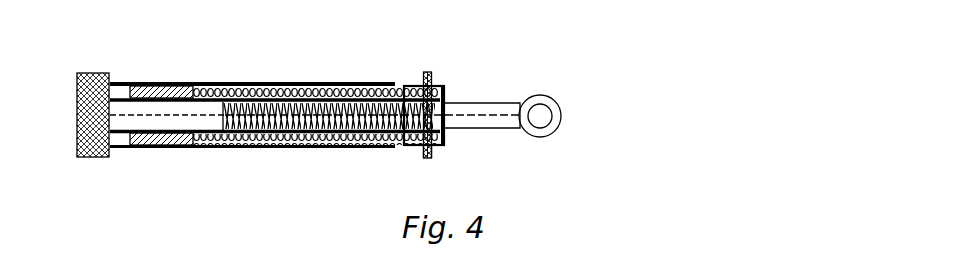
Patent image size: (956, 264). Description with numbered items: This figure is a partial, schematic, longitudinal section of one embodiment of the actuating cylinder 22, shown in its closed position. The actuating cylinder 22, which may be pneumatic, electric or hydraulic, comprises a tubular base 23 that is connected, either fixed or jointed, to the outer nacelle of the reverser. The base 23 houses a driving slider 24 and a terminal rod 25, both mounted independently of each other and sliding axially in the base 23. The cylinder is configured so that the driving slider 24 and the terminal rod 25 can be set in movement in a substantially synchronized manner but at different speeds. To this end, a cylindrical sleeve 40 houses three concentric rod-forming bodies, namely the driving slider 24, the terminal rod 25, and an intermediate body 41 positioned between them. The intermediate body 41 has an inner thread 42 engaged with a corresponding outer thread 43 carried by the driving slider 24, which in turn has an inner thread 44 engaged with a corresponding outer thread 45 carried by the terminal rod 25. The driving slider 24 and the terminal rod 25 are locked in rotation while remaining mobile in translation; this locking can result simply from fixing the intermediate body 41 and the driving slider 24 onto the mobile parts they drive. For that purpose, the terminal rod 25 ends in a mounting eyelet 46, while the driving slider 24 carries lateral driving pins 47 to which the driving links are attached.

The actuating cylinder 22 is at (350, 72).
The tubular base 23 is at (91, 73).
The driving slider 24 is at (407, 140).
The terminal rod 25 is at (335, 134).
The cylindrical sleeve 40 is at (281, 86).
The intermediate body 41 is at (408, 96).
The inner thread 42 is at (148, 84).
The outer thread 43 is at (209, 96).
The inner thread 44 is at (427, 157).
The outer thread 45 is at (455, 106).
The mounting eyelet 46 is at (558, 106).
The lateral driving pins 47 is at (432, 79).